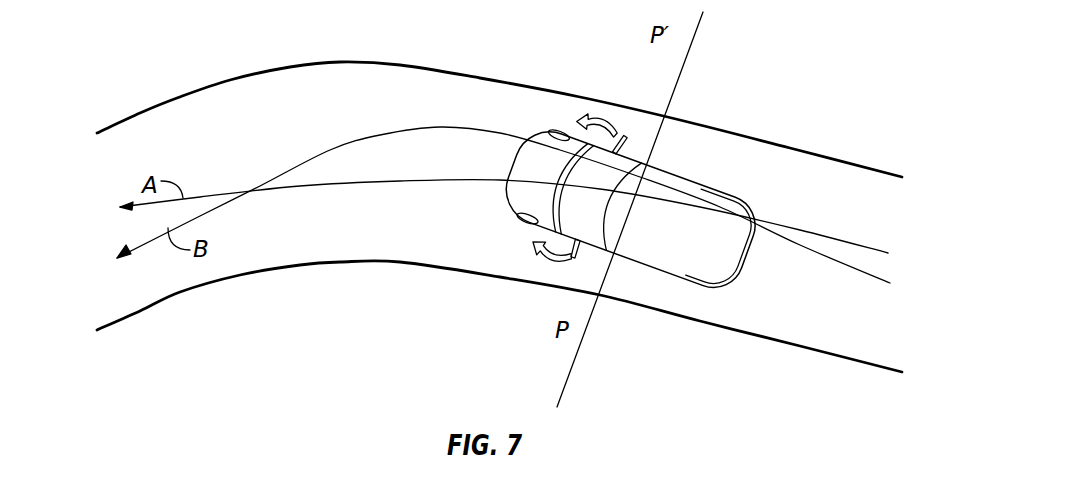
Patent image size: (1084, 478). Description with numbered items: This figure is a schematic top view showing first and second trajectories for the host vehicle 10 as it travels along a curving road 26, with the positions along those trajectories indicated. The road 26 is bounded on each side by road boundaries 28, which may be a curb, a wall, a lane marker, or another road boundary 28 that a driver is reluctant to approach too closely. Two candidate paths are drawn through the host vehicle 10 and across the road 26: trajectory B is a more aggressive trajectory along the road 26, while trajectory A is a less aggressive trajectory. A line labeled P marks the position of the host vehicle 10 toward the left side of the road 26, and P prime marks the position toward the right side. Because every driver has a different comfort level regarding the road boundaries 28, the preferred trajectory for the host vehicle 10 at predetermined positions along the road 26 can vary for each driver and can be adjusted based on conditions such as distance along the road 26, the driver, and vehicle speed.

The host vehicle 10 is at (694, 170).
The road 26 is at (187, 127).
The road boundary 28 is at (338, 63).